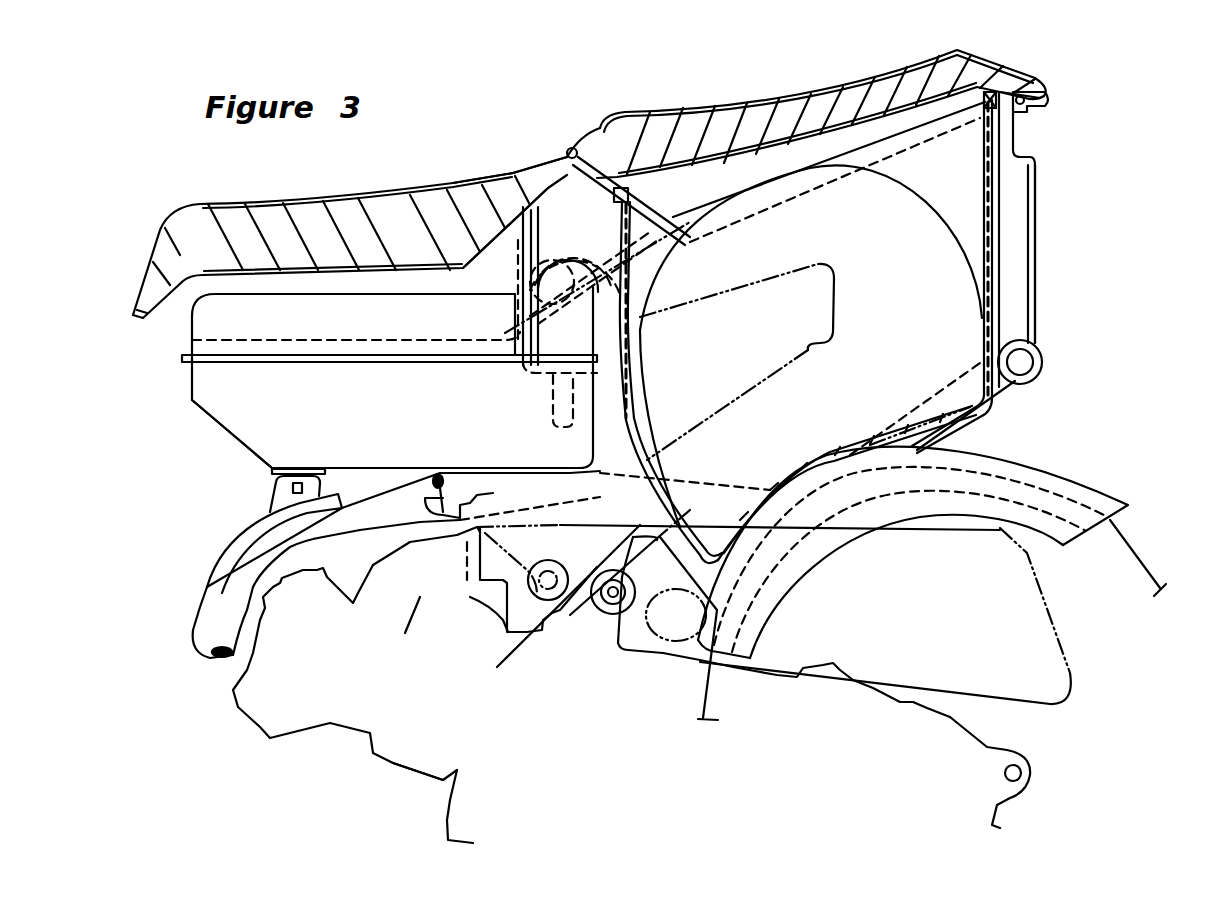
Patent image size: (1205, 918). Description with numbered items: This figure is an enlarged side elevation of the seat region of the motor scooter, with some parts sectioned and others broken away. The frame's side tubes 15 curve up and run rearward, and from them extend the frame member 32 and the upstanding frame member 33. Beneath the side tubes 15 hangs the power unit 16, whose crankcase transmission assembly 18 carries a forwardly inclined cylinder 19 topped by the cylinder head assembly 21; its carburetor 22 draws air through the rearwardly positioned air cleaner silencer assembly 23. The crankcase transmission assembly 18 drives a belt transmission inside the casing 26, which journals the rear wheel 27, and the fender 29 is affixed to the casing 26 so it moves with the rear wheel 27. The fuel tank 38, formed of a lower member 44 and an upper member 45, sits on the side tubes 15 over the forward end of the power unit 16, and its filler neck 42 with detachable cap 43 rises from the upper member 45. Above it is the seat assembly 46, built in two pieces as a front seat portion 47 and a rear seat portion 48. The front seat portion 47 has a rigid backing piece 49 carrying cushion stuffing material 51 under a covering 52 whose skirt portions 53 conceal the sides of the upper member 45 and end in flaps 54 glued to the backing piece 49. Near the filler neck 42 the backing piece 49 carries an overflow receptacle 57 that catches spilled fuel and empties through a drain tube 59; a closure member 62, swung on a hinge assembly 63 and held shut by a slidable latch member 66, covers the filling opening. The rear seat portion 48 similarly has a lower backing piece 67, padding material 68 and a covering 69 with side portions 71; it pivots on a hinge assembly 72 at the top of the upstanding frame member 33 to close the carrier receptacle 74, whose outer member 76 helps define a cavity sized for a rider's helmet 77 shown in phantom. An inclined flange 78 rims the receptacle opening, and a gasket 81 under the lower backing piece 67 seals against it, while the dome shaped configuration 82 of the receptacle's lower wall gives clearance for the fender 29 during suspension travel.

The side tubes 15 is at (195, 617).
The power unit 16 is at (327, 767).
The crankcase transmission assembly 18 is at (445, 803).
The cylinder 19 is at (390, 760).
The cylinder head assembly 21 is at (240, 717).
The carburetor 22 is at (527, 640).
The air cleaner silencer assembly 23 is at (1060, 640).
The casing 26 is at (1005, 750).
The rear wheel 27 is at (1128, 536).
The fender 29 is at (1090, 478).
The frame member 32 is at (1007, 398).
The upstanding frame member 33 is at (1044, 299).
The fuel tank 38 is at (138, 350).
The filler neck 42 is at (536, 207).
The cap 43 is at (567, 158).
The lower member 44 is at (186, 402).
The upper member 45 is at (187, 340).
The seat assembly 46 is at (512, 72).
The front seat portion 47 is at (515, 160).
The rear seat portion 48 is at (594, 122).
The backing piece 49 is at (352, 267).
The cushion stuffing material 51 is at (268, 222).
The covering 52 is at (337, 195).
The skirt portions 53 is at (178, 268).
The flaps 54 is at (305, 345).
The overflow receptacle 57 is at (608, 379).
The drain tube 59 is at (553, 388).
The closure member 62 is at (652, 206).
The hinge assembly 63 is at (507, 177).
The latch member 66 is at (676, 262).
The lower backing piece 67 is at (772, 109).
The padding material 68 is at (692, 126).
The covering 69 is at (735, 124).
The side portions 71 is at (848, 118).
The hinge assembly 72 is at (1027, 108).
The carrier receptacle 74 is at (1004, 274).
The outer member 76 is at (998, 247).
The helmet 77 is at (933, 190).
The flange 78 is at (912, 130).
The gasket 81 is at (952, 62).
The dome shaped configuration 82 is at (830, 454).